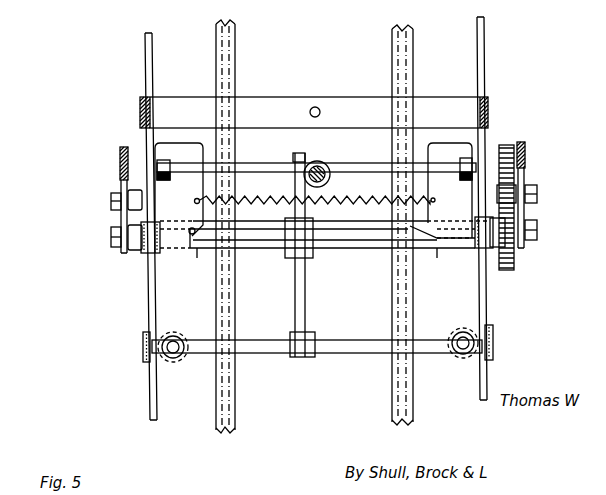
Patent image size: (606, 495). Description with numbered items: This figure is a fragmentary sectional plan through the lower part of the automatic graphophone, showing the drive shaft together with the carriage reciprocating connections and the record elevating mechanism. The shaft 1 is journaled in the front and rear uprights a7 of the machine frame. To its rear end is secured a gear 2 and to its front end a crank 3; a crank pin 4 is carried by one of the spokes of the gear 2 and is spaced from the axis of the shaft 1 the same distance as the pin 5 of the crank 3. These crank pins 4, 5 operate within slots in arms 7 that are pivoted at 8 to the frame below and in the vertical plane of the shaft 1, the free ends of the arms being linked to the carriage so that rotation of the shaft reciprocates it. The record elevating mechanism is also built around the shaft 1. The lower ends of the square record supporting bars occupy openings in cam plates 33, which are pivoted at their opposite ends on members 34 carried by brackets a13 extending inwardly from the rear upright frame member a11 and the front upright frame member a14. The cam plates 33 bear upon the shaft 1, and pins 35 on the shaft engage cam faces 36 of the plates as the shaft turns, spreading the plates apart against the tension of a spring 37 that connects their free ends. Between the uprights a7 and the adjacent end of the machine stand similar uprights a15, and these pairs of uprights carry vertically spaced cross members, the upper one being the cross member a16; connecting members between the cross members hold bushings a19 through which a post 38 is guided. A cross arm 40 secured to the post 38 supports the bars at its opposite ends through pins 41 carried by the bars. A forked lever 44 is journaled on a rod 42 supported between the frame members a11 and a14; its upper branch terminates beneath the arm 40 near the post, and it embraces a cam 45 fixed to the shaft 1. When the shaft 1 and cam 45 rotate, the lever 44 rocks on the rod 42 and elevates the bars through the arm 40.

The shaft 1 is at (262, 250).
The gear 2 is at (508, 166).
The crank 3 is at (153, 220).
The crank pin 4 is at (537, 193).
The pin 5 is at (110, 197).
The arms 7 is at (120, 170).
The pivot 8 is at (110, 245).
The cam plates 33 is at (313, 198).
The members 34 is at (456, 381).
The pins 35 is at (197, 258).
The cam faces 36 is at (436, 230).
The spring 37 is at (315, 189).
The post 38 is at (303, 182).
The cross arm 40 is at (258, 163).
The pins 41 is at (165, 162).
The rod 42 is at (350, 340).
The forked lever 44 is at (307, 287).
The cam 45 is at (293, 262).
The uprights a7 is at (505, 256).
The rear upright frame member a11 is at (494, 341).
The brackets a13 is at (150, 372).
The front upright frame member a14 is at (145, 343).
The uprights a15 is at (488, 108).
The cross member a16 is at (331, 133).
The bushings a19 is at (318, 164).